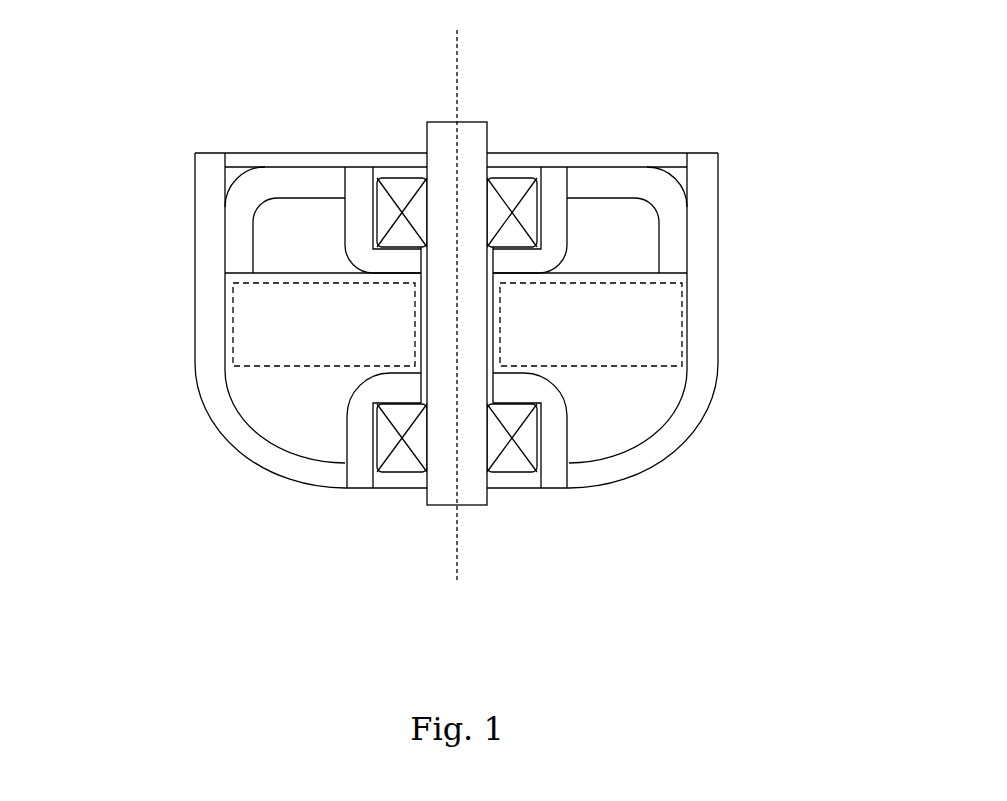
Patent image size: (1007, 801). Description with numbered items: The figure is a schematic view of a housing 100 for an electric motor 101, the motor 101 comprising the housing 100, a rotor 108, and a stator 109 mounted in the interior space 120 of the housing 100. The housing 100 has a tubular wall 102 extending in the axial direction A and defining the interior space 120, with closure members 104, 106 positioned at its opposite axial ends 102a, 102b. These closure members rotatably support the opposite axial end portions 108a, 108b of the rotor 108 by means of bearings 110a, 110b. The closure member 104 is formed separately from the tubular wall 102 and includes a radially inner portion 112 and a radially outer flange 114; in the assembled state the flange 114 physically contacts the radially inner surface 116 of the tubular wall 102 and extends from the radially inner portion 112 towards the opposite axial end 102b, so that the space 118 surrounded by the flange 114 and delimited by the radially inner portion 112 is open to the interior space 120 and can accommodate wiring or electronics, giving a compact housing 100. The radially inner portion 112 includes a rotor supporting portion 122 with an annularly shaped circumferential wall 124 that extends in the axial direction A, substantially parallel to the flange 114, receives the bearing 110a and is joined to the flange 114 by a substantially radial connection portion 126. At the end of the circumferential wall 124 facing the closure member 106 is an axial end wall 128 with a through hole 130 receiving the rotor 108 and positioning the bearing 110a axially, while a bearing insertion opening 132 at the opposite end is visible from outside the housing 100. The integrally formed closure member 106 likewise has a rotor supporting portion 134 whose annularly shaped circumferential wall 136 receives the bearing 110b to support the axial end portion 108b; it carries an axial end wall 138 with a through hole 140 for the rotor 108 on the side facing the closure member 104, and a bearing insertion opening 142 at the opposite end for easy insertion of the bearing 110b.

The housing 100 is at (106, 91).
The electric motor 101 is at (152, 204).
The tubular wall 102 is at (724, 305).
The axial end 102a is at (724, 180).
The opposite axial end 102b is at (706, 456).
The separately formed closure member 104 is at (674, 133).
The integrally formed closure member 106 is at (605, 489).
The rotor 108 is at (440, 116).
The axial end portion 108a is at (433, 135).
The axial end portion 108b is at (445, 480).
The stator 109 is at (237, 348).
The bearing 110a is at (400, 190).
The bearing 110b is at (402, 460).
The radially inner portion 112 is at (573, 177).
The radially outer flange 114 is at (670, 227).
The radially inner surface 116 is at (691, 263).
The space 118 is at (313, 242).
The interior space 120 is at (322, 392).
The rotor supporting portion 122 is at (579, 248).
The annularly shaped circumferential wall 124 is at (357, 237).
The connection portion 126 is at (613, 158).
The axial end wall 128 is at (412, 283).
The through hole 130 is at (398, 263).
The bearing insertion opening 132 is at (510, 168).
The rotor supporting portion 134 is at (579, 419).
The annularly shaped circumferential wall 136 is at (360, 450).
The axial end wall 138 is at (398, 389).
The through hole 140 is at (413, 366).
The bearing insertion opening 142 is at (527, 480).
The axial direction A is at (464, 61).